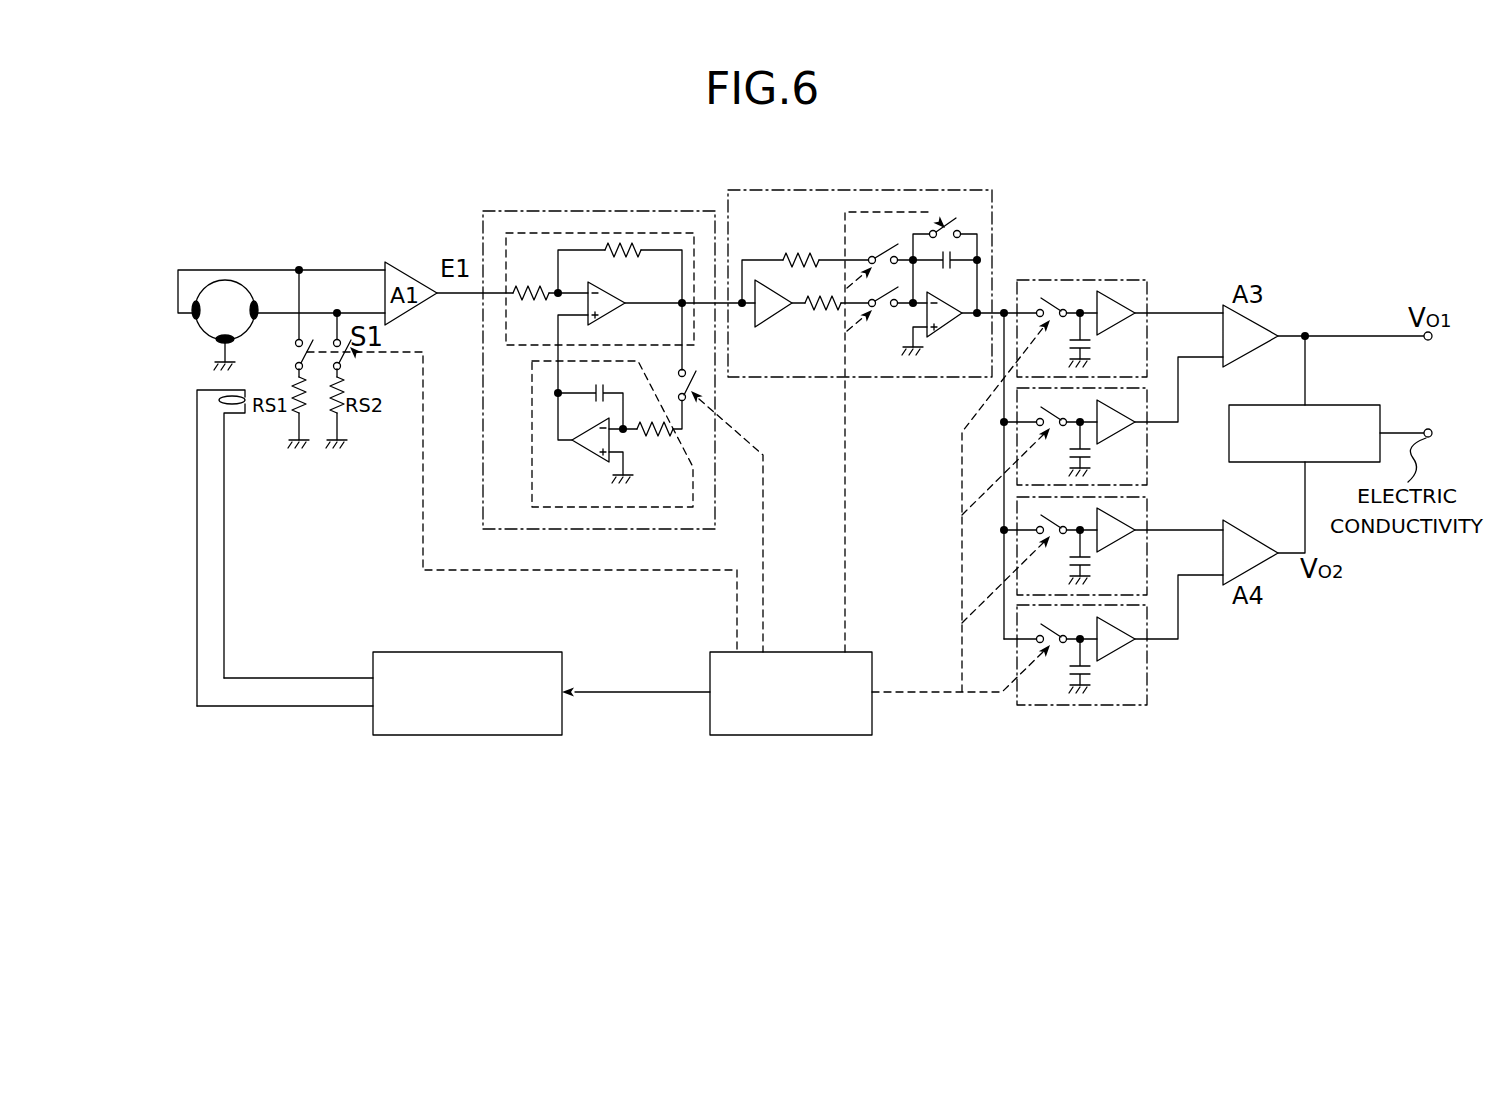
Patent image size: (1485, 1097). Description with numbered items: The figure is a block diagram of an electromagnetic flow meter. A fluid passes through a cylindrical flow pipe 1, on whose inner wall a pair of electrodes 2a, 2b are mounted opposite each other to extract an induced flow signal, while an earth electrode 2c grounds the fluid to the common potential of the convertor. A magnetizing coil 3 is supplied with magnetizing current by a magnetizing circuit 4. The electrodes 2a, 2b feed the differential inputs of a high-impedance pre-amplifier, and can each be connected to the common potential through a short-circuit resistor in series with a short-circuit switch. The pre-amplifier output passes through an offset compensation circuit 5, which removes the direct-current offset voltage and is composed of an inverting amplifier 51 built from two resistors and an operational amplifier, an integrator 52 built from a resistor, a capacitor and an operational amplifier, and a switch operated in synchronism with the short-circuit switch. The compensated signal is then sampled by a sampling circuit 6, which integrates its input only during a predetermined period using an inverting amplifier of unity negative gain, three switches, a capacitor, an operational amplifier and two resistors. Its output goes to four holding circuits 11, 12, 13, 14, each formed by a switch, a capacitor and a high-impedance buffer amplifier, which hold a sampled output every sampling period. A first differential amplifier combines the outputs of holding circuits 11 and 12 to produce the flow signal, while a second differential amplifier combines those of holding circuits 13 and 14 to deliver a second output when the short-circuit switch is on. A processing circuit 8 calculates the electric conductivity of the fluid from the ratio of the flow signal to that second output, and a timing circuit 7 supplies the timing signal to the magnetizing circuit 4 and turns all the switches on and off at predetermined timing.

The flow pipe 1 is at (198, 328).
The electrode 2a is at (208, 283).
The electrode 2b is at (249, 290).
The earth electrode 2c is at (234, 340).
The magnetizing coil 3 is at (285, 548).
The magnetizing circuit 4 is at (486, 735).
The offset compensation circuit 5 is at (636, 211).
The inverting amplifier 51 is at (545, 233).
The integrator 52 is at (531, 414).
The sampling circuit 6 is at (862, 190).
The timing circuit 7 is at (792, 735).
The processing circuit 8 is at (1345, 405).
The holding circuit 11 is at (1115, 280).
The holding circuit 12 is at (1148, 469).
The holding circuit 13 is at (1148, 513).
The holding circuit 14 is at (1148, 689).